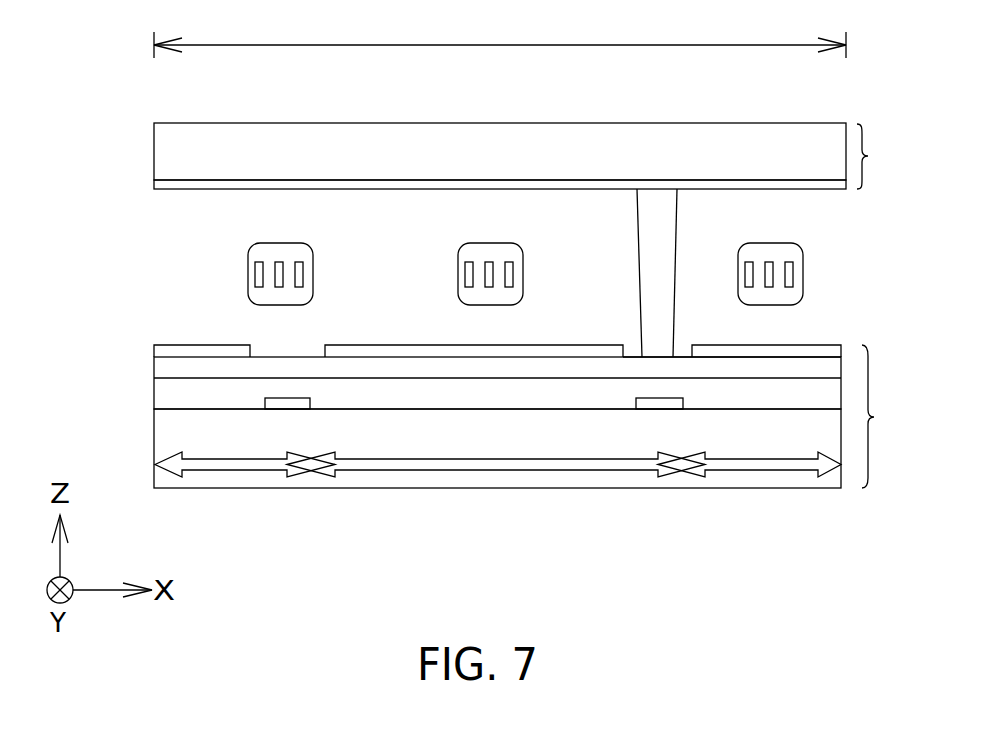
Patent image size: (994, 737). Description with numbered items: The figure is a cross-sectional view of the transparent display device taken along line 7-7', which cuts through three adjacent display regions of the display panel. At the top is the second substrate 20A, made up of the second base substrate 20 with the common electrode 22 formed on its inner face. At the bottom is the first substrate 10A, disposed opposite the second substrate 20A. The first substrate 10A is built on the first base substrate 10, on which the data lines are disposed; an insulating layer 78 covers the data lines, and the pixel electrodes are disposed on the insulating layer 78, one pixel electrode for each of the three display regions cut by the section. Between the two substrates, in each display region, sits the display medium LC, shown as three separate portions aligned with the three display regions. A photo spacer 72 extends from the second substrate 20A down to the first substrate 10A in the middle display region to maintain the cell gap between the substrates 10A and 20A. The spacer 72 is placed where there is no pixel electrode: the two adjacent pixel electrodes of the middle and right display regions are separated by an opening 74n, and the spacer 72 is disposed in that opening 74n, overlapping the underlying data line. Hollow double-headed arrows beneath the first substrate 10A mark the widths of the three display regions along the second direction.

The section line 7-7' is at (500, 35).
The second base substrate 20 is at (455, 163).
The second substrate 20A is at (891, 156).
The common electrode 22 is at (838, 184).
The photo spacer 72 is at (655, 205).
The display medium LC is at (287, 243).
The first base substrate 10 is at (390, 448).
The first substrate 10A is at (546, 416).
The insulating layer 78 is at (827, 365).
The opening 74n is at (632, 357).